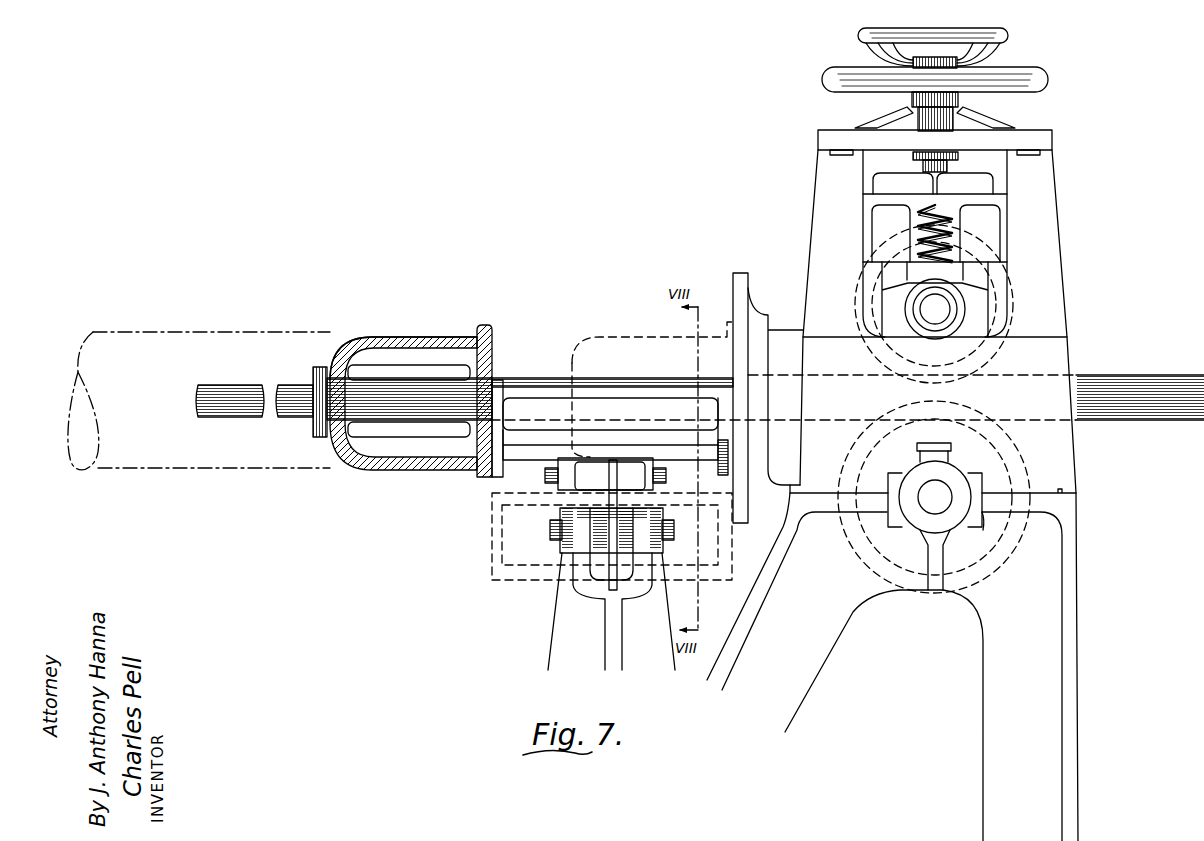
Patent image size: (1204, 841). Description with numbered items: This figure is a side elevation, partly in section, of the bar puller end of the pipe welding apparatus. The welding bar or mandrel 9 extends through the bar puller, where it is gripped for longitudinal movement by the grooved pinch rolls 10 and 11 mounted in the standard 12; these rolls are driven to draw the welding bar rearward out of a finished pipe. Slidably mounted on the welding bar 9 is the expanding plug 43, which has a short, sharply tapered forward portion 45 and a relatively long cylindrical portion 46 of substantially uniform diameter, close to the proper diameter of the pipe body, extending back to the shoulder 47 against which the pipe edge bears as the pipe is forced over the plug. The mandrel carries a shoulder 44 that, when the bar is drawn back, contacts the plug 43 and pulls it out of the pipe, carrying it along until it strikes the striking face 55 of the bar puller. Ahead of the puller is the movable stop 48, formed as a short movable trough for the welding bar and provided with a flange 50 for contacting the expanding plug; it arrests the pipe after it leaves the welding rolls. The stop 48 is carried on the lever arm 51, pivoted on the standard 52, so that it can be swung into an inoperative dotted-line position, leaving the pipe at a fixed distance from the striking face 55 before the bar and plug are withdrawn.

The welding bar or mandrel 9 is at (531, 377).
The grooved roll 10 is at (1015, 318).
The grooved roll 11 is at (1029, 465).
The standard 12 is at (1066, 242).
The expanding plug 43 is at (385, 362).
The shoulder 44 is at (320, 366).
The tapered forward portion 45 is at (343, 460).
The cylindrical portion 46 is at (420, 335).
The shoulder 47 is at (492, 331).
The movable stop 48 is at (605, 407).
The flange 50 is at (497, 478).
The lever arm 51 is at (607, 483).
The standard 52 is at (549, 630).
The striking face 55 is at (731, 279).